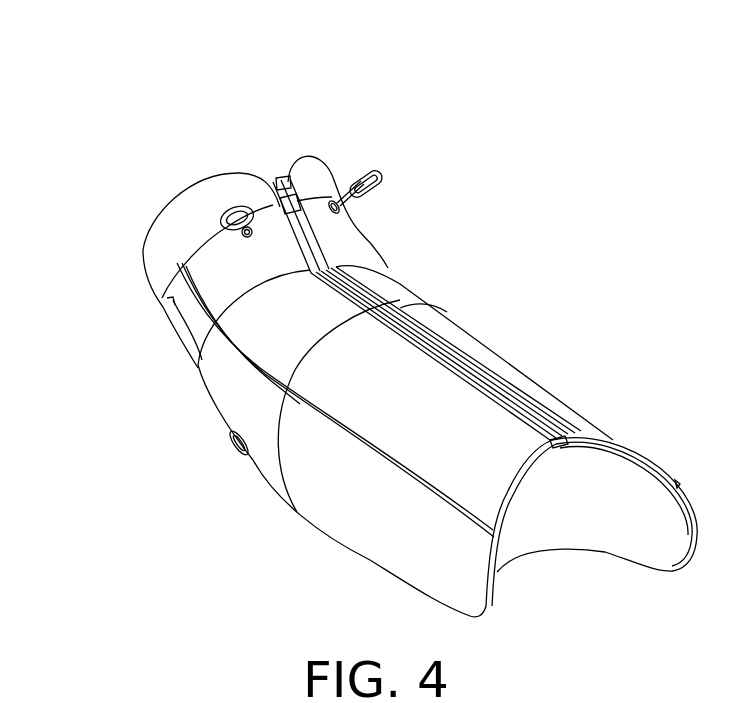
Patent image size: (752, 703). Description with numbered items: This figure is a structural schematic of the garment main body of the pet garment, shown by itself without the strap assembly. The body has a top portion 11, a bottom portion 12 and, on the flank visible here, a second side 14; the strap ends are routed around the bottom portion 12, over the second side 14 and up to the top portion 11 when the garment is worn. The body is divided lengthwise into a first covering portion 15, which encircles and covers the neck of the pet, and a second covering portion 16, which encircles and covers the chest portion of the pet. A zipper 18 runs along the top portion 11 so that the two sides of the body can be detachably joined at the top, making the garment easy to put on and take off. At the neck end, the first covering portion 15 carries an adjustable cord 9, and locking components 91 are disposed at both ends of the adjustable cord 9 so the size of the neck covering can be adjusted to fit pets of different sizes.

The adjustable cord 9 is at (372, 173).
The locking components 91 is at (378, 188).
The zipper 18 is at (283, 178).
The first covering portion 15 is at (230, 267).
The top portion 11 is at (443, 328).
The second side 14 is at (250, 376).
The second covering portion 16 is at (327, 462).
The bottom portion 12 is at (418, 580).